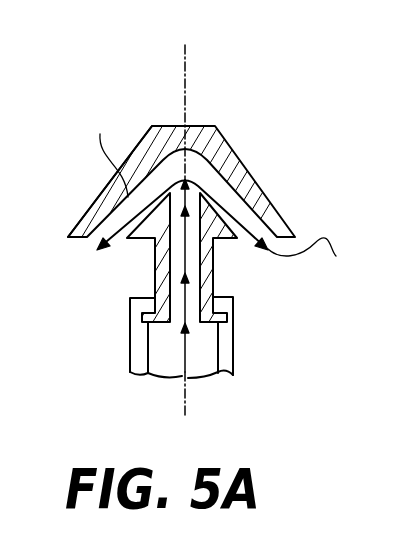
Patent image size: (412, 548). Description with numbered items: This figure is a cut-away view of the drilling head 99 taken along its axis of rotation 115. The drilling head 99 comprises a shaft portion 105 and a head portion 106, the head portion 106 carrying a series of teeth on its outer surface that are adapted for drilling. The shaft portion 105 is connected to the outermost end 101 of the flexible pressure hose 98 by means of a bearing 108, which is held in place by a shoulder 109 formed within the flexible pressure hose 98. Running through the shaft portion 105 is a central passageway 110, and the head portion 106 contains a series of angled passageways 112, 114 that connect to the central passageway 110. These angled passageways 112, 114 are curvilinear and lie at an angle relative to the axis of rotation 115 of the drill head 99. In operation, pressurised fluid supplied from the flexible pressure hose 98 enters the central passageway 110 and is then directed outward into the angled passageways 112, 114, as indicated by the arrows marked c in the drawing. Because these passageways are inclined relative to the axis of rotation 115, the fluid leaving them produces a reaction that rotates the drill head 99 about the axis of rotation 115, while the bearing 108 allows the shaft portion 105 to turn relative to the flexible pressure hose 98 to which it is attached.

The flexible pressure hose 98 is at (235, 362).
The drilling head 99 is at (228, 100).
The outermost end 101 is at (233, 328).
The shaft portion 105 is at (203, 281).
The head portion 106 is at (235, 162).
The bearing 108 is at (140, 316).
The shoulder 109 is at (140, 301).
The central passageway 110 is at (192, 258).
The angled passageway 112 is at (130, 200).
The angled passageway 114 is at (248, 212).
The axis of rotation 115 is at (185, 48).